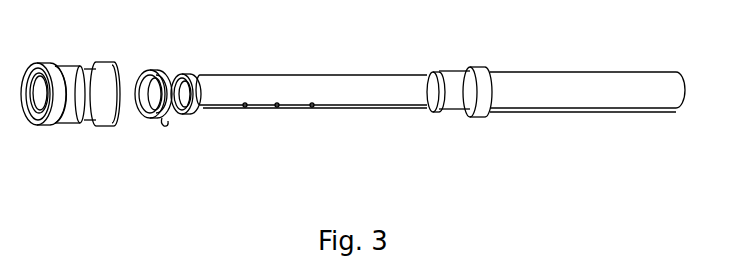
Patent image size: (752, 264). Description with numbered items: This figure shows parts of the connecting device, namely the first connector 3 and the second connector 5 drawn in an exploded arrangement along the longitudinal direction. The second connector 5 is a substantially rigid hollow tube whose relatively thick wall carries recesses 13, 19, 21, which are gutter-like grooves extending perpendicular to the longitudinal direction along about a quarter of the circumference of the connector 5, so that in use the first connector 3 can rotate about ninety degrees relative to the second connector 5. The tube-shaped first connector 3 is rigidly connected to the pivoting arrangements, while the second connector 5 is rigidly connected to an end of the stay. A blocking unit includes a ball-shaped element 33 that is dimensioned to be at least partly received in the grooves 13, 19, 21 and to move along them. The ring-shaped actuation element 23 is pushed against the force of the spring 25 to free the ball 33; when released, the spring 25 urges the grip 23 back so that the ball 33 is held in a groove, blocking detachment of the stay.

The first connector 3 is at (606, 74).
The second connector 5 is at (265, 80).
The recess 13 is at (245, 107).
The recess 19 is at (277, 107).
The recess 21 is at (312, 107).
The actuation element 23 is at (67, 62).
The spring 25 is at (157, 68).
The ball-shaped element 33 is at (165, 126).